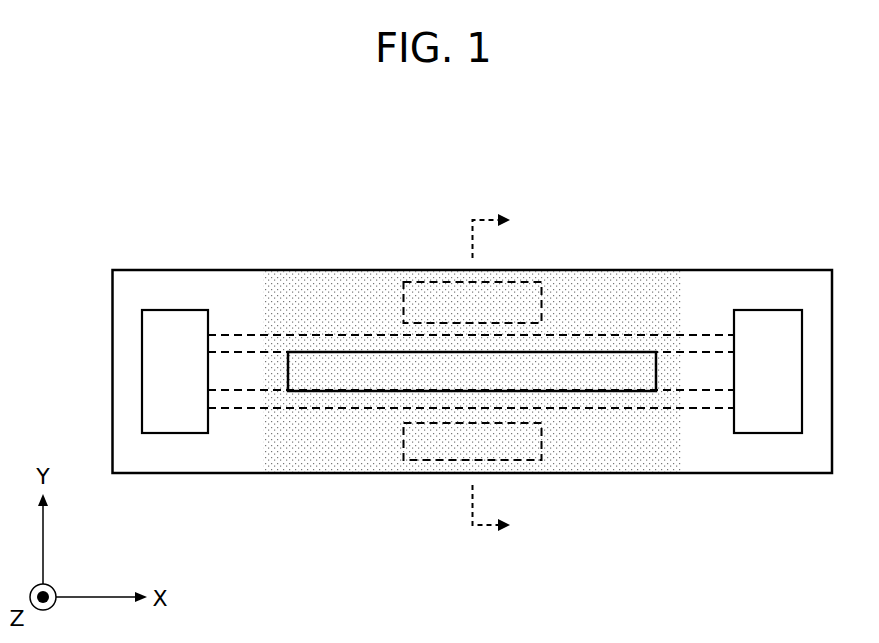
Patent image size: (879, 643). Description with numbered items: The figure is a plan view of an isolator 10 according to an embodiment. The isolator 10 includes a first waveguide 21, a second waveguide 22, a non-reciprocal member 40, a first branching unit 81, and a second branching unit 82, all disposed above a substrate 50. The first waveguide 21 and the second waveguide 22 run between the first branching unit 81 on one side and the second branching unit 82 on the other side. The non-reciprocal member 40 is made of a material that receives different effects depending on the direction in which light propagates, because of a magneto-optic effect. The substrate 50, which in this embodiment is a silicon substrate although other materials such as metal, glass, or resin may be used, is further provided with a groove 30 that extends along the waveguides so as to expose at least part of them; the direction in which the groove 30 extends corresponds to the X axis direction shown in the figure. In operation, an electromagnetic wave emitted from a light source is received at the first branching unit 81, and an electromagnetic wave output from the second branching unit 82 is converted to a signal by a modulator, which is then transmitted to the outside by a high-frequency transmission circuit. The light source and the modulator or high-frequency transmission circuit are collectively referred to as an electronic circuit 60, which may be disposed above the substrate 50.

The isolator 10 is at (716, 208).
The first waveguide 21 is at (237, 343).
The second waveguide 22 is at (238, 400).
The groove 30 is at (342, 372).
The non-reciprocal member 40 is at (655, 288).
The substrate 50 is at (768, 290).
The electronic circuit 60 is at (443, 303).
The first branching unit 81 is at (178, 423).
The second branching unit 82 is at (767, 423).